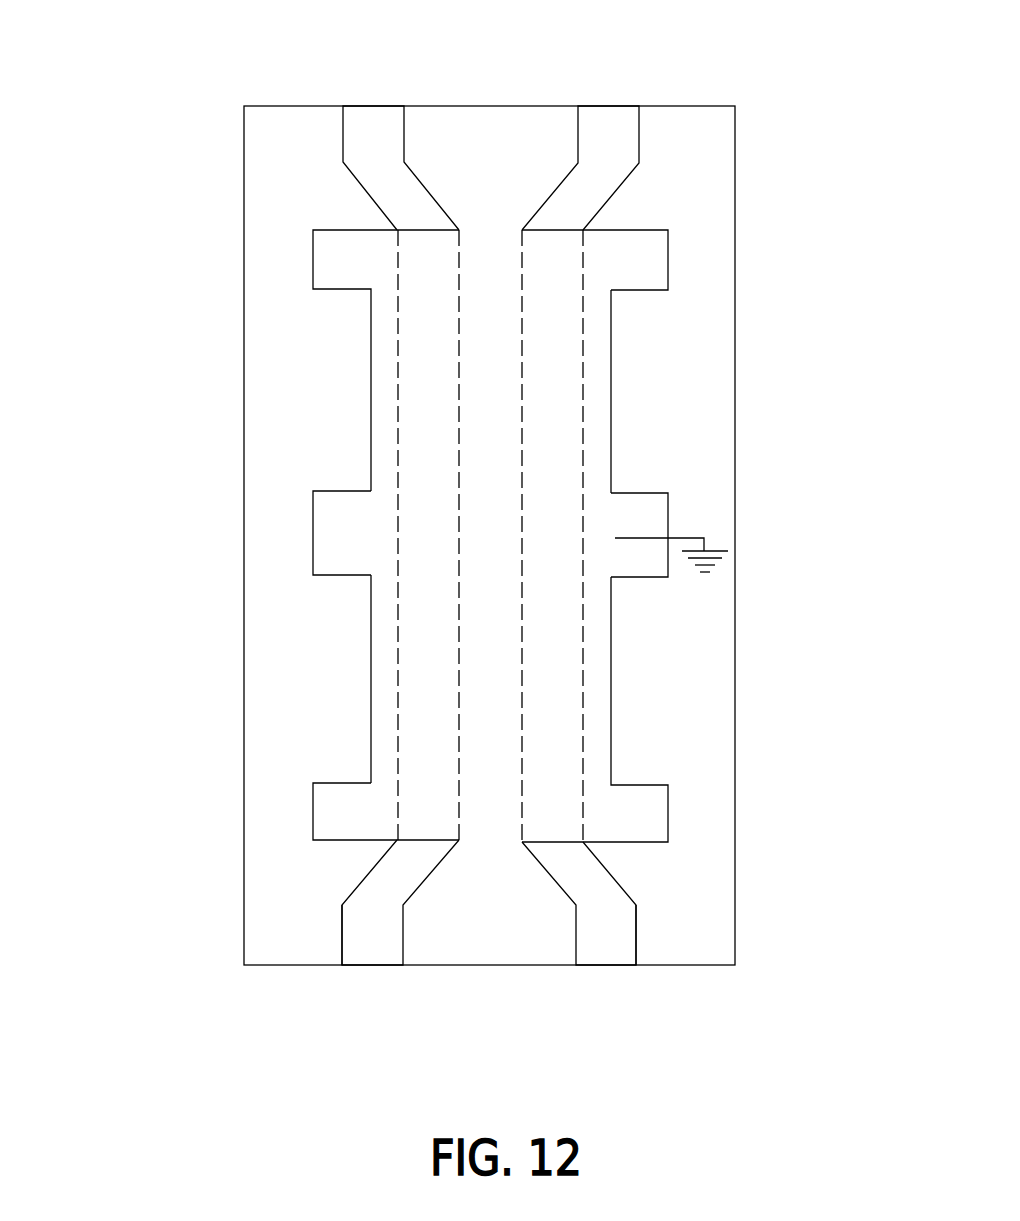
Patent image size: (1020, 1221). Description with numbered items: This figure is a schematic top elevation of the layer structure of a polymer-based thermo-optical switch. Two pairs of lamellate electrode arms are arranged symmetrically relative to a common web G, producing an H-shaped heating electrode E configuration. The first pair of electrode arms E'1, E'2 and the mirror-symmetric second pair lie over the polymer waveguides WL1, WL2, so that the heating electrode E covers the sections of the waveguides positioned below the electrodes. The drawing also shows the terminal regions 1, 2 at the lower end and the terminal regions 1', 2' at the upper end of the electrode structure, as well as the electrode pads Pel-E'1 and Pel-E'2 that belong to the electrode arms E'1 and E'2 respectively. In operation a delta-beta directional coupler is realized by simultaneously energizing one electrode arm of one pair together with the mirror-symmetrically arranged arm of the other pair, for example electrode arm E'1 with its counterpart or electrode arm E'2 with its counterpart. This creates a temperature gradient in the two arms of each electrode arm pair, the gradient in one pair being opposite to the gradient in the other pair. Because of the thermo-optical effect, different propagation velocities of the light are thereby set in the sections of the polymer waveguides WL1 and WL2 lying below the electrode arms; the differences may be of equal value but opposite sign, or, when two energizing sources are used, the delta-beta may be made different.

The first terminal (upper) 1' is at (401, 116).
The second terminal (upper) 2' is at (580, 116).
The first terminal (lower) 1 is at (400, 948).
The second terminal (lower) 2 is at (579, 949).
The heating electrode E is at (271, 524).
The lamellate electrode arm E'1 is at (257, 679).
The lamellate electrode arm E'2 is at (681, 709).
The electrode pad of E'1 Pel-E'1 is at (255, 809).
The electrode pad of E'2 Pel-E'2 is at (715, 260).
The common web G is at (600, 557).
The polymer waveguide WL1 is at (380, 882).
The polymer waveguide WL2 is at (602, 884).